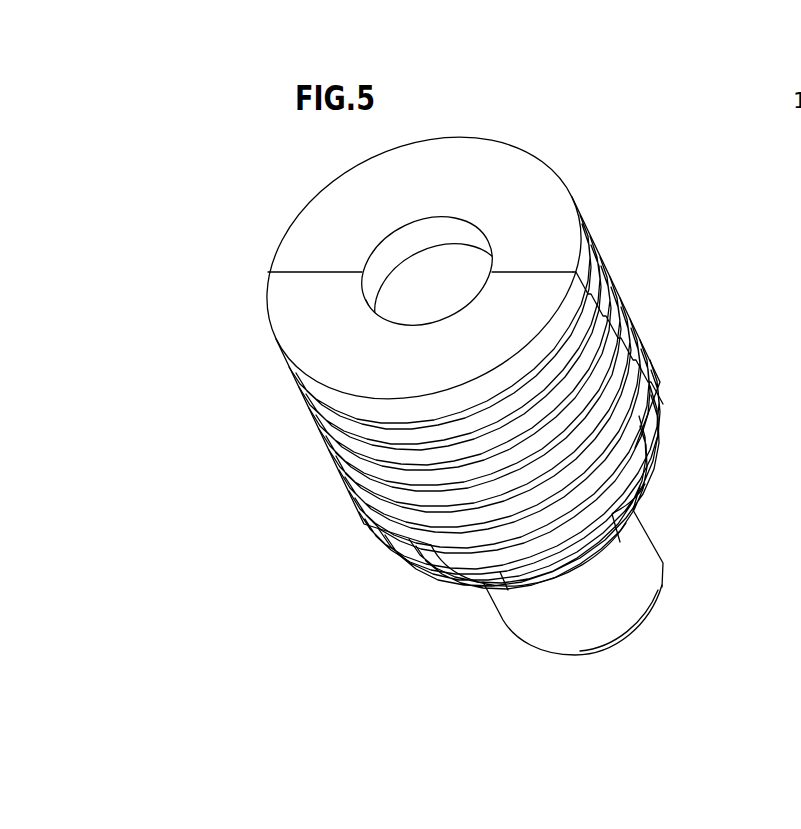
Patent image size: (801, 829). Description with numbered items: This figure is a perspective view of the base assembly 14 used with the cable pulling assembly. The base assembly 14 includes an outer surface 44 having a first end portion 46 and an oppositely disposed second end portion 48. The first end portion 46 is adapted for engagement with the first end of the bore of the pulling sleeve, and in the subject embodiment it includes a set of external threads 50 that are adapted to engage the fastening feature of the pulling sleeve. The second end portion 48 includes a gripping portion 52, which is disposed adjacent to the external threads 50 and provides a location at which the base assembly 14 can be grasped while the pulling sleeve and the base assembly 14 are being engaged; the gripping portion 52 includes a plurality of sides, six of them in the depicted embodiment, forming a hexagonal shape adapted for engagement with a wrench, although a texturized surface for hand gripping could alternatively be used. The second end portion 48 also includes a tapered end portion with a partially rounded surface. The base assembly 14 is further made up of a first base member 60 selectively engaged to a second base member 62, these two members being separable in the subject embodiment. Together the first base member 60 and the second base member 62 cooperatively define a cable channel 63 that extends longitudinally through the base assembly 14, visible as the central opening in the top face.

The base assembly 14 is at (231, 215).
The first base member 60 is at (460, 123).
The cable channel 63 is at (429, 258).
The second base member 62 is at (245, 332).
The first end portion 46 is at (605, 176).
The outer surface 44 is at (681, 300).
The external threads 50 is at (357, 477).
The gripping portion 52 is at (666, 487).
The second end portion 48 is at (686, 539).